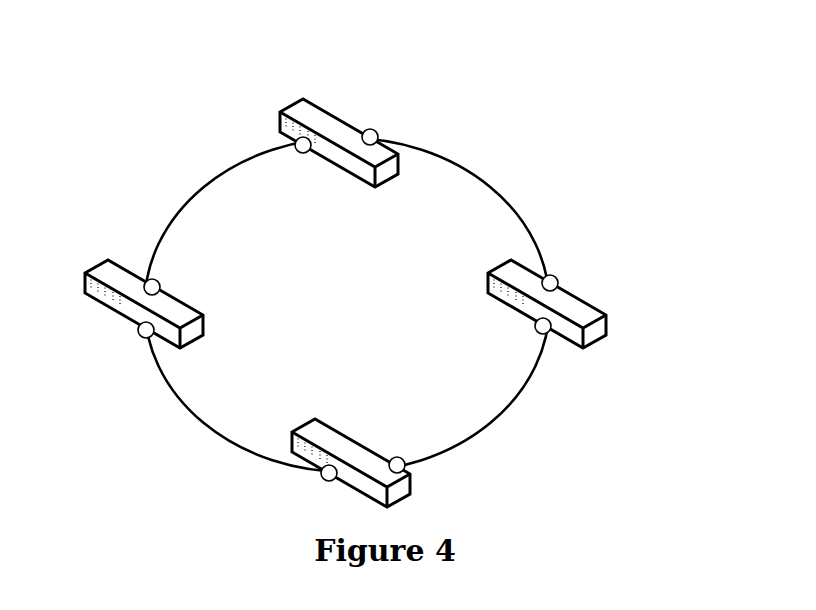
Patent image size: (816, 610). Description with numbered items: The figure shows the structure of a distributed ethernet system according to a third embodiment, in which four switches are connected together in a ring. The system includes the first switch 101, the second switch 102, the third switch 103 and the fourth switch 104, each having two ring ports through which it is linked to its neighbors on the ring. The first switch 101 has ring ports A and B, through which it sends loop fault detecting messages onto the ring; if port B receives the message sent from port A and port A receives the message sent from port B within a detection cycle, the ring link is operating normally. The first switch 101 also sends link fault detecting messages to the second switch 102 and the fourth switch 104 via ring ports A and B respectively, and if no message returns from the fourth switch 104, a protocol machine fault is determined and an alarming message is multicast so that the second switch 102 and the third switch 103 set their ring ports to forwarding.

The first switch 101 is at (307, 97).
The second switch 102 is at (168, 305).
The third switch 103 is at (325, 437).
The fourth switch 104 is at (562, 302).